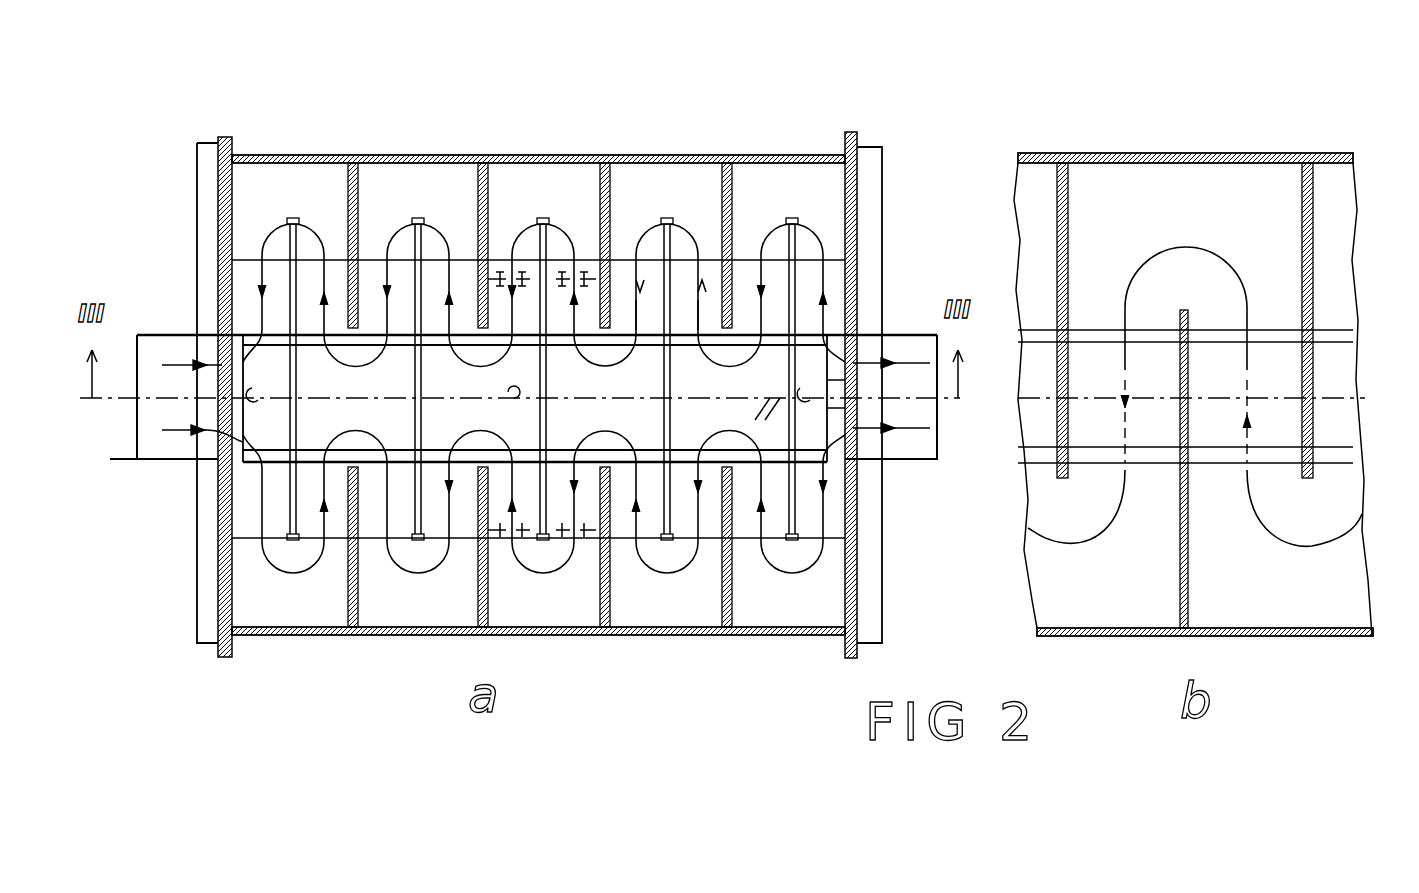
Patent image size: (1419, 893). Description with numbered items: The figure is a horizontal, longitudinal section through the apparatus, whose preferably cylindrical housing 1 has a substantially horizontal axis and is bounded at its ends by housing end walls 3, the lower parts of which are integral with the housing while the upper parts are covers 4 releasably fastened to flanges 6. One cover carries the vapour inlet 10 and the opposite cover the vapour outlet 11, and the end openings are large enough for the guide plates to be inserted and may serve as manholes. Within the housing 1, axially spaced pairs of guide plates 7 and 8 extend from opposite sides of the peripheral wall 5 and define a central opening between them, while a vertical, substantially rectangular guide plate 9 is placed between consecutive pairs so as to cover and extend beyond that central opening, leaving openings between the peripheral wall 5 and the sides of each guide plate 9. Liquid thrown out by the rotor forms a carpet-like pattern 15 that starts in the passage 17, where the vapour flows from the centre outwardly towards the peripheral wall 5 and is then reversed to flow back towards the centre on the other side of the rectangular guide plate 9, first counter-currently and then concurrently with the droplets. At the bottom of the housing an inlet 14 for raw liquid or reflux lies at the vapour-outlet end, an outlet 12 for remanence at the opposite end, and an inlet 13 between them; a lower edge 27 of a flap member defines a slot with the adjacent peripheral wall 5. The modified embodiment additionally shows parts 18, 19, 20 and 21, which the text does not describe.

In FIG. 2a, the housing 1 is at (514, 101).
In FIG. 2a, the housing end wall 3 is at (876, 207).
In FIG. 2a, the cover 4 is at (857, 187).
In FIG. 2a, the peripheral wall 5 is at (800, 150).
In FIG. 2b, the peripheral wall 5 is at (1172, 150).
In FIG. 2a, the flange 6 is at (850, 135).
In FIG. 2a, the guide plate 7 is at (723, 220).
In FIG. 2a, the guide plate 8 is at (610, 588).
In FIG. 2a, the rectangular guide plate 9 is at (412, 298).
In FIG. 2a, the vapour inlet 10 is at (910, 473).
In FIG. 2a, the vapour outlet 11 is at (162, 463).
In FIG. 2a, the outlet for remanence 12 is at (800, 395).
In FIG. 2a, the inlet 13 is at (520, 394).
In FIG. 2a, the inlet for raw liquid product 14 is at (268, 393).
In FIG. 2a, the carpet-like pattern 15 is at (510, 253).
In FIG. 2a, the passage 17 is at (544, 502).
In FIG. 2b, the passage 17 is at (1195, 396).
In FIG. 2a, the chamber 18 is at (678, 303).
In FIG. 2a, the chamber 19 is at (544, 272).
In FIG. 2b, the partition 20 is at (1188, 578).
In FIG. 2b, the partition 21 is at (1068, 228).
In FIG. 2a, the lower edge 27 is at (358, 617).